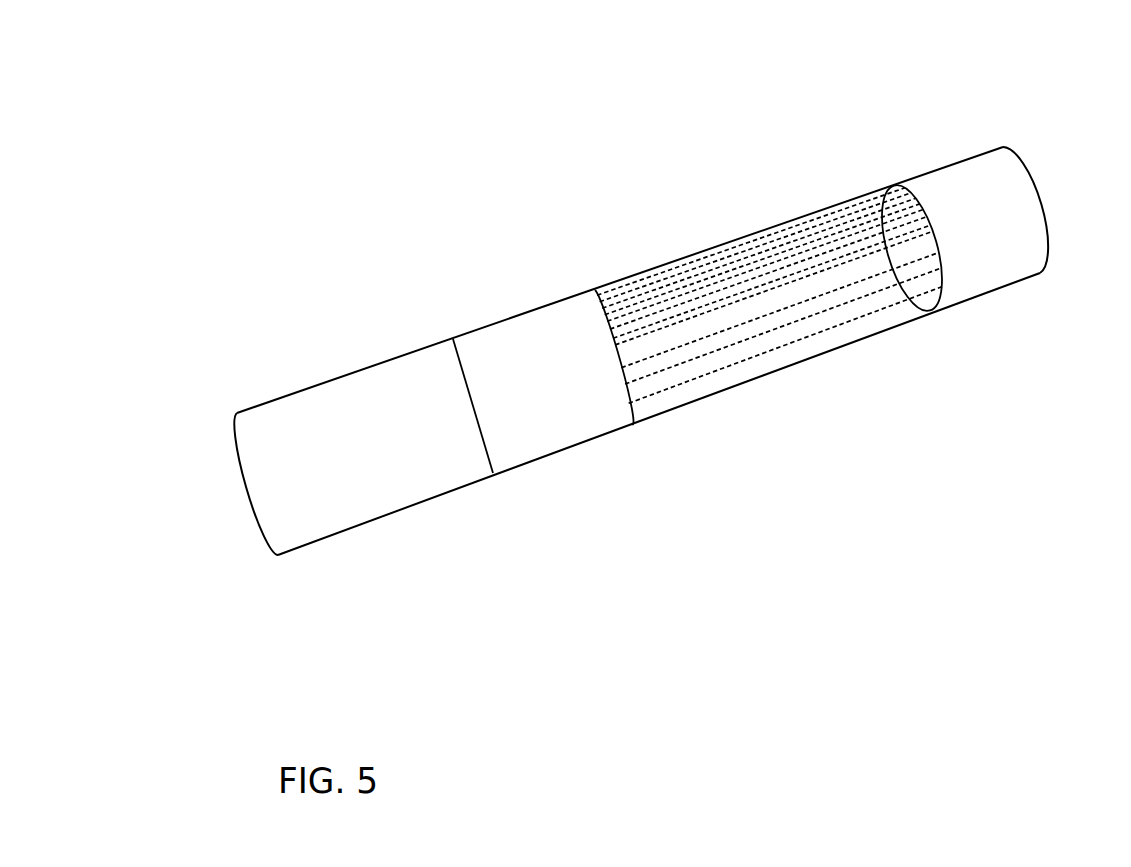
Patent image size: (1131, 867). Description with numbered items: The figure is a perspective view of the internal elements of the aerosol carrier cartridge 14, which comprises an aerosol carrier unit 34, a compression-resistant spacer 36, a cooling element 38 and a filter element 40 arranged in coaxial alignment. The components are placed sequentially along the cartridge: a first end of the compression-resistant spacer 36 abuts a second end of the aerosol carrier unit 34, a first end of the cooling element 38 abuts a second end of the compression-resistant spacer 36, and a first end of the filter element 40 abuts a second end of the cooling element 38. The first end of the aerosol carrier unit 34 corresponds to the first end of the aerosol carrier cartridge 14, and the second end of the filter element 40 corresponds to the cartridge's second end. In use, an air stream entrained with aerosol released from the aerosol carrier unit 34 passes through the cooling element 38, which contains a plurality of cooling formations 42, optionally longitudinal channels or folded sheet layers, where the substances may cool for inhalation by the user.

The aerosol carrier cartridge 14 is at (353, 20).
The aerosol carrier unit 34 is at (370, 487).
The compression-resistant spacer 36 is at (558, 423).
The cooling element 38 is at (638, 276).
The filter element 40 is at (960, 188).
The cooling formations 42 is at (810, 305).